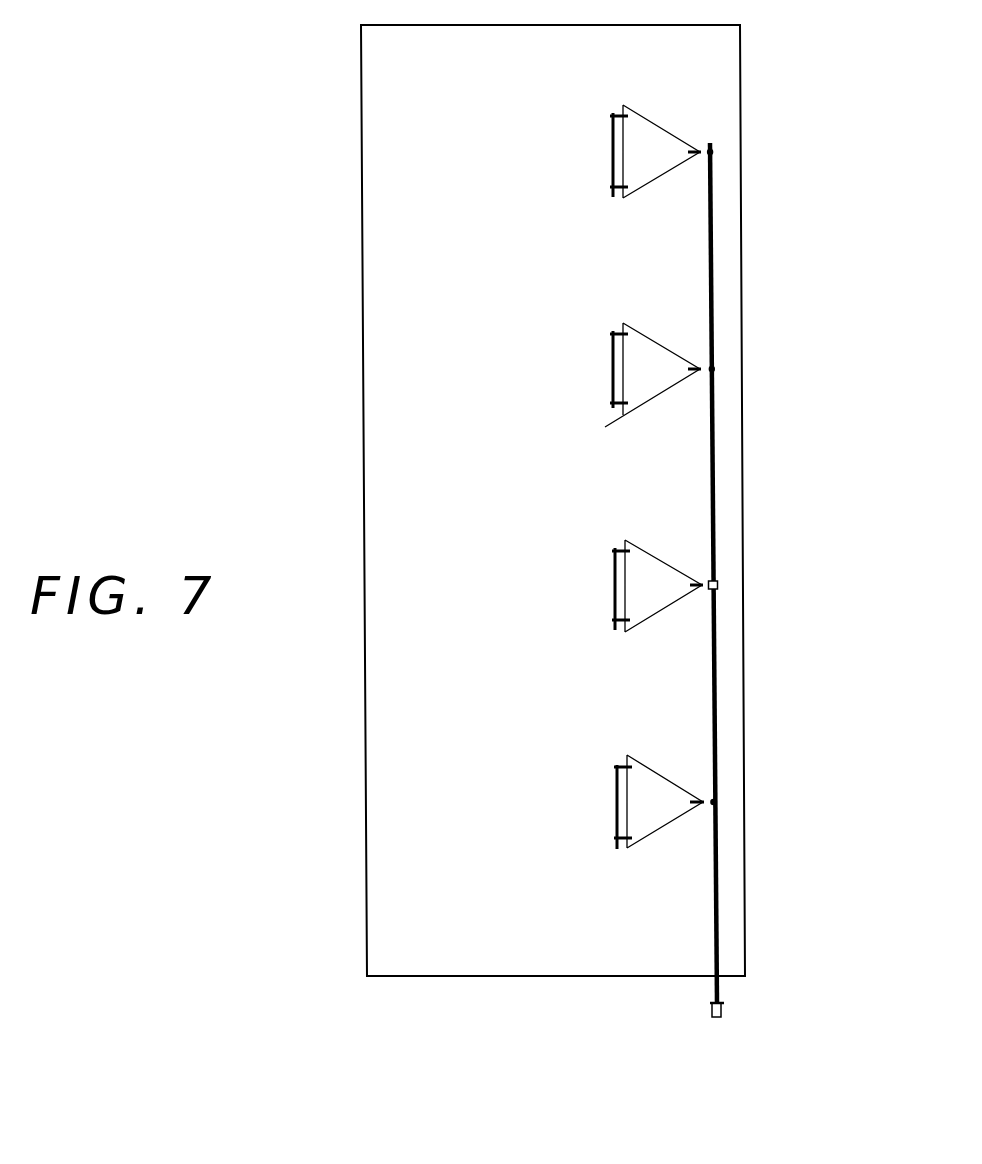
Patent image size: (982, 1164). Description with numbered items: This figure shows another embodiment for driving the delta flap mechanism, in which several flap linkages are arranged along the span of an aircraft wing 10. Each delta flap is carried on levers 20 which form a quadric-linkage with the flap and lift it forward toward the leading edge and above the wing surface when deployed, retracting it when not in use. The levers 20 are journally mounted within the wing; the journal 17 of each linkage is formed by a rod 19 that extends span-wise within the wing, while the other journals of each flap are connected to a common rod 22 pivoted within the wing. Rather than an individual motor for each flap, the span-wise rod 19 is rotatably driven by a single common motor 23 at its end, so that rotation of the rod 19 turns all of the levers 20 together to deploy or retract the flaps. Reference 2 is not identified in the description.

The upper attachment tick 2 is at (620, 765).
The common rod 22 is at (615, 812).
The aircraft wing 10 is at (615, 837).
The journal 17 is at (713, 800).
The levers 20 is at (663, 807).
The rod 19 is at (720, 877).
The common motor 23 is at (722, 1010).